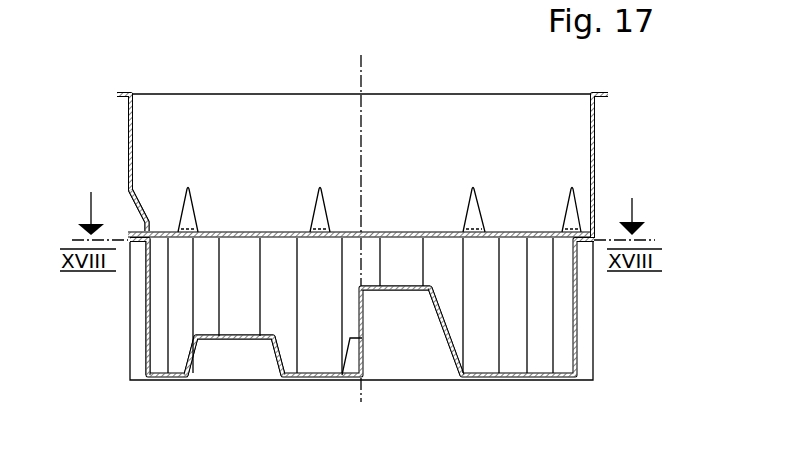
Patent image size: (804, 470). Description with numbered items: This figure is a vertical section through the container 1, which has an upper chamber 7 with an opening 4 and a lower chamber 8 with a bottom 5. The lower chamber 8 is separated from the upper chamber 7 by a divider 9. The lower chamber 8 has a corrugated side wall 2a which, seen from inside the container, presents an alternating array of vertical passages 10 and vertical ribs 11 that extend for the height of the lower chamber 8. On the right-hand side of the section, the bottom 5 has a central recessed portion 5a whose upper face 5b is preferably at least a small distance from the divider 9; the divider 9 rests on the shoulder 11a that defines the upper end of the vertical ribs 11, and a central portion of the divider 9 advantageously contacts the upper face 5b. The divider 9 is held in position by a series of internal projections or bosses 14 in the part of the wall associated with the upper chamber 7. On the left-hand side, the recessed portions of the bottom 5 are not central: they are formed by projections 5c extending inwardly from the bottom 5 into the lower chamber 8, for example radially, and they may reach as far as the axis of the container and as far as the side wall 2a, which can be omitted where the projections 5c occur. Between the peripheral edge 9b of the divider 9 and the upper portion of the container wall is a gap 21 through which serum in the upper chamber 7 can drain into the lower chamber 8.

The container 1 is at (318, 138).
The opening 4 is at (262, 88).
The upper chamber 7 is at (342, 155).
The peripheral edge 9b is at (127, 228).
The internal projections or bosses 14 is at (186, 212).
The divider 9 is at (434, 231).
The shoulder 11a is at (572, 226).
The gap 21 is at (592, 237).
The bottom 5 is at (336, 343).
The central recessed portion 5a is at (440, 330).
The upper face 5b is at (397, 286).
The projections 5c is at (236, 335).
The corrugated side wall 2a is at (146, 330).
The lower chamber 8 is at (330, 305).
The vertical passages 10 is at (537, 333).
The vertical ribs 11 is at (562, 360).